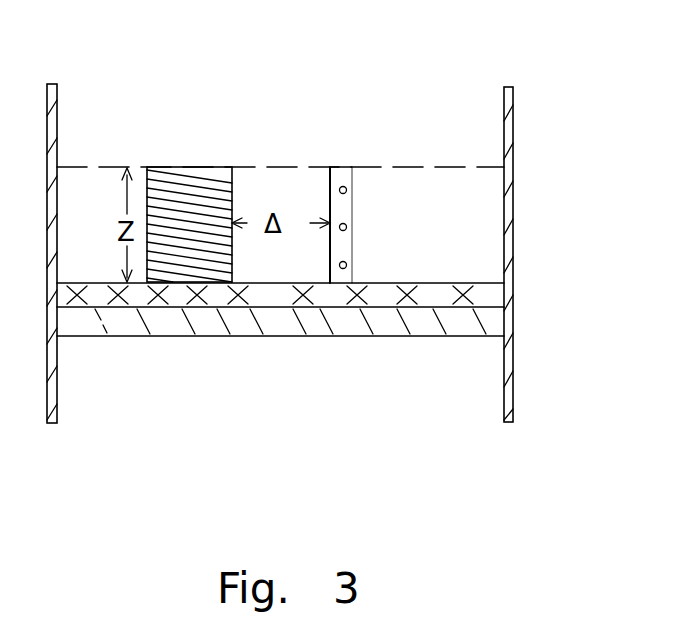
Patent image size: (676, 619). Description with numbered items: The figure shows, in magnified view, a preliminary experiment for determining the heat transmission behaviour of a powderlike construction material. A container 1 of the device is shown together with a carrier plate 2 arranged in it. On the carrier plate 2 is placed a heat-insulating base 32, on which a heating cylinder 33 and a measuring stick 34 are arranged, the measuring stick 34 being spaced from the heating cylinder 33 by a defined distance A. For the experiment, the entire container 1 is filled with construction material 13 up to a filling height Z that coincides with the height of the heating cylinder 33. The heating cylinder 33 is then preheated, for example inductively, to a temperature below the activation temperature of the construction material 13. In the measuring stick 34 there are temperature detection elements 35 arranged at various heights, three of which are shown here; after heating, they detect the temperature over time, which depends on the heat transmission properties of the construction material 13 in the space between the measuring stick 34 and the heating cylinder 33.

The container 1 is at (512, 248).
The carrier plate 2 is at (433, 337).
The construction material 13 is at (97, 187).
The heat-insulating base 32 is at (385, 297).
The heating cylinder 33 is at (200, 178).
The measuring stick 34 is at (338, 175).
The temperature detection elements 35 is at (347, 190).